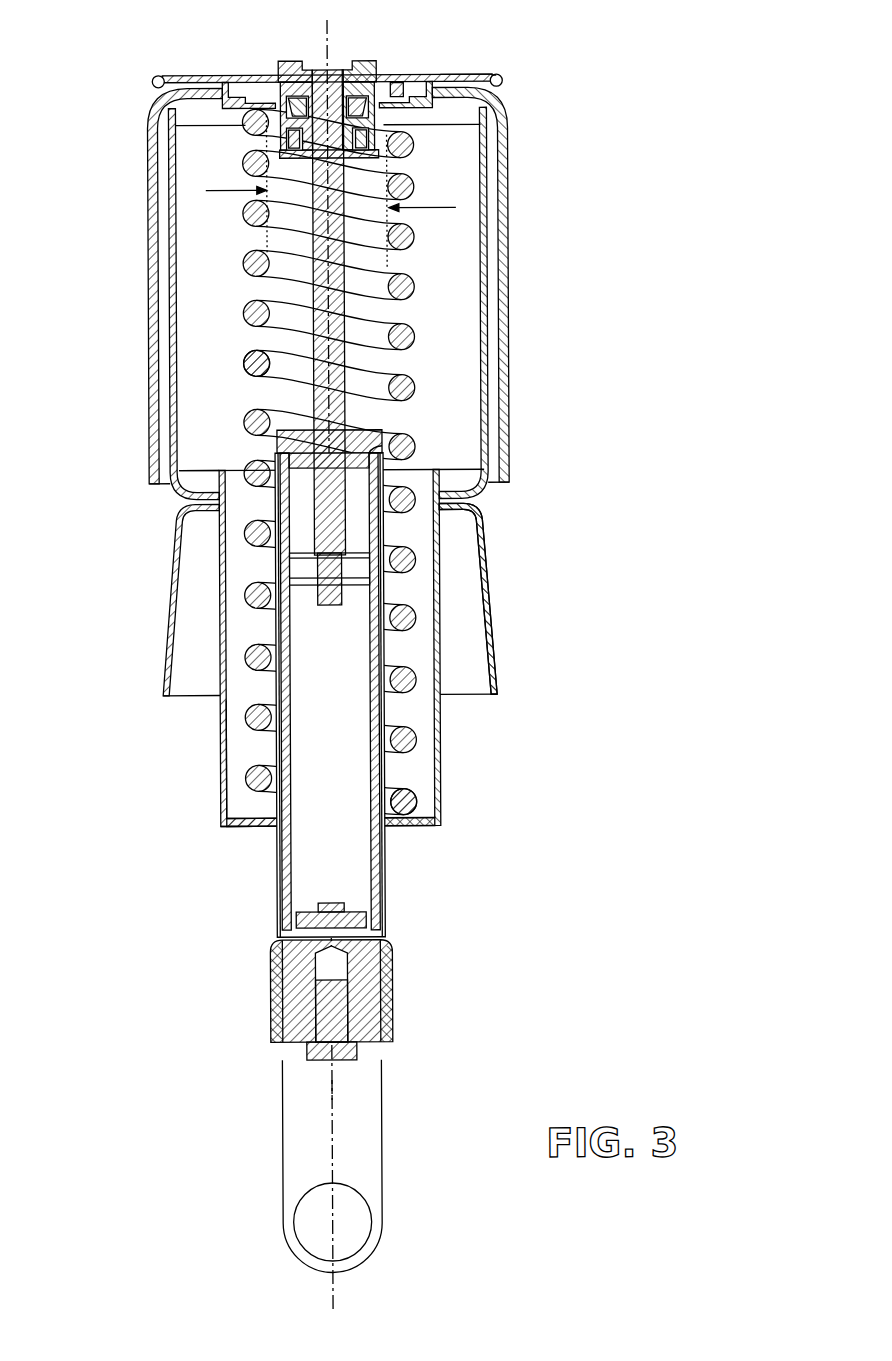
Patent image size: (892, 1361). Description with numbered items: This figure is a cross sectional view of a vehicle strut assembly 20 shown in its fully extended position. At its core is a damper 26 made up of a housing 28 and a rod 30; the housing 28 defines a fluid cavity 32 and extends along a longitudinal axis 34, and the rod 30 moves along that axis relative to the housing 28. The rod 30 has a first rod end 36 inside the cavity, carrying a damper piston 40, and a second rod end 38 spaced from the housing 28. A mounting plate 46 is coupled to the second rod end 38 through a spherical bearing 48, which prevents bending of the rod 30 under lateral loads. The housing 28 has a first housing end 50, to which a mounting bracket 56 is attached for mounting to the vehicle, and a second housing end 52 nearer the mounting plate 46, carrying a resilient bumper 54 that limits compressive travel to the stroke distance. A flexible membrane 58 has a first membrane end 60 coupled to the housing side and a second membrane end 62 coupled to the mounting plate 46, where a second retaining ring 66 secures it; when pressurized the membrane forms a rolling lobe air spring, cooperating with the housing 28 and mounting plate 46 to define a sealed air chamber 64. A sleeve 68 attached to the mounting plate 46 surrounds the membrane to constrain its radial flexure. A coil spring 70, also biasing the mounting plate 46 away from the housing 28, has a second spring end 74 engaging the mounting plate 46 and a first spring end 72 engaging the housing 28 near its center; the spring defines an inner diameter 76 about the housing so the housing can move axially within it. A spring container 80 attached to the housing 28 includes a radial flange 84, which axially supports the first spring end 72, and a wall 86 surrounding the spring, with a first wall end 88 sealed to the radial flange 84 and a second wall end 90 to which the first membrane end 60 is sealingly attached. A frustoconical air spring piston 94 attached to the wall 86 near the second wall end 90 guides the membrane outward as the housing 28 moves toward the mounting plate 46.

The strut assembly 20 is at (546, 30).
The damper 26 is at (264, 875).
The housing 28 is at (382, 840).
The rod 30 is at (355, 307).
The fluid cavity 32 is at (311, 711).
The longitudinal axis 34 is at (327, 1093).
The first rod end 36 is at (330, 607).
The second rod end 38 is at (337, 62).
The damper piston 40 is at (349, 570).
The mounting plate 46 is at (418, 76).
The spherical bearing 48 is at (382, 76).
The first housing end 50 is at (350, 933).
The second housing end 52 is at (367, 432).
The bumper 54 is at (378, 445).
The mounting bracket 56 is at (285, 1150).
The flexible membrane 58 is at (481, 205).
The first membrane end 60 is at (483, 503).
The second membrane end 62 is at (488, 76).
The air chamber 64 is at (199, 291).
The second retaining ring 66 is at (501, 83).
The sleeve 68 is at (508, 210).
The coil spring 70 is at (243, 366).
The first spring end 72 is at (413, 799).
The second spring end 74 is at (256, 101).
The inner diameter 76 is at (222, 190).
The spring container 80 is at (213, 703).
The radial flange 84 is at (245, 826).
The wall 86 is at (213, 797).
The first wall end 88 is at (217, 826).
The second wall end 90 is at (219, 467).
The air spring piston 94 is at (169, 596).